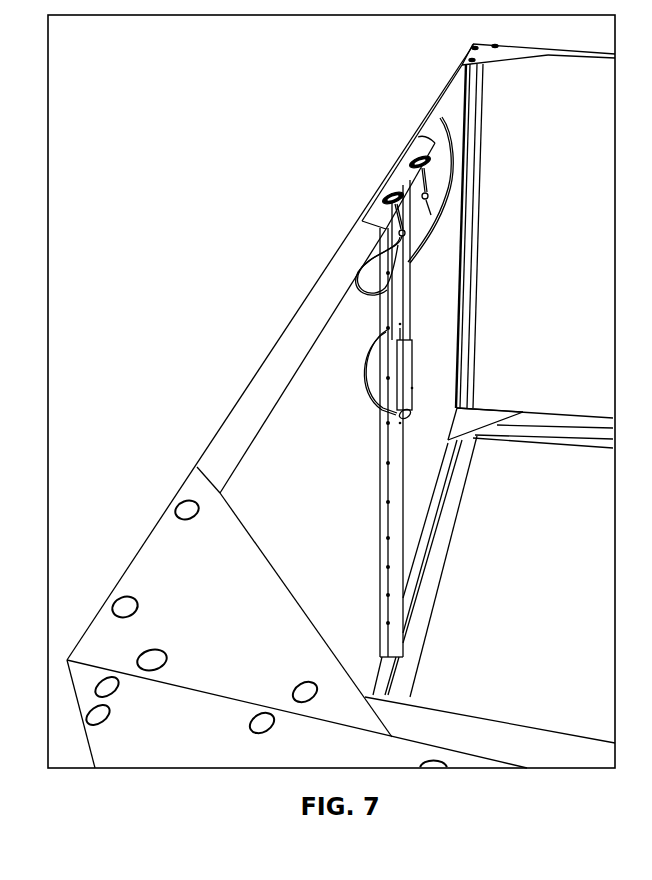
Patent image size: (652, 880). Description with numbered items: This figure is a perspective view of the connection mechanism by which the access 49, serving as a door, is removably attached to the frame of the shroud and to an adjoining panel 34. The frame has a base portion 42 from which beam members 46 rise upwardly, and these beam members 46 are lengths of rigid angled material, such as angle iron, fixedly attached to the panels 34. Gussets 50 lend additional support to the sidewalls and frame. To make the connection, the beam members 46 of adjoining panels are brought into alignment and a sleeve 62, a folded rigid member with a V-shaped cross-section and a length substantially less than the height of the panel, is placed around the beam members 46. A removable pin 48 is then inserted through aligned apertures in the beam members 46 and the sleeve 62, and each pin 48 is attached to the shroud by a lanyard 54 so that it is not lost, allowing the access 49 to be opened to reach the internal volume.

The panel 34 is at (531, 231).
The base portion 42 is at (428, 632).
The beam member 46 is at (377, 583).
The removable pin 48 is at (411, 157).
The access 49 is at (322, 499).
The gusset 50 is at (155, 550).
The lanyard 54 is at (440, 118).
The sleeve 62 is at (395, 180).